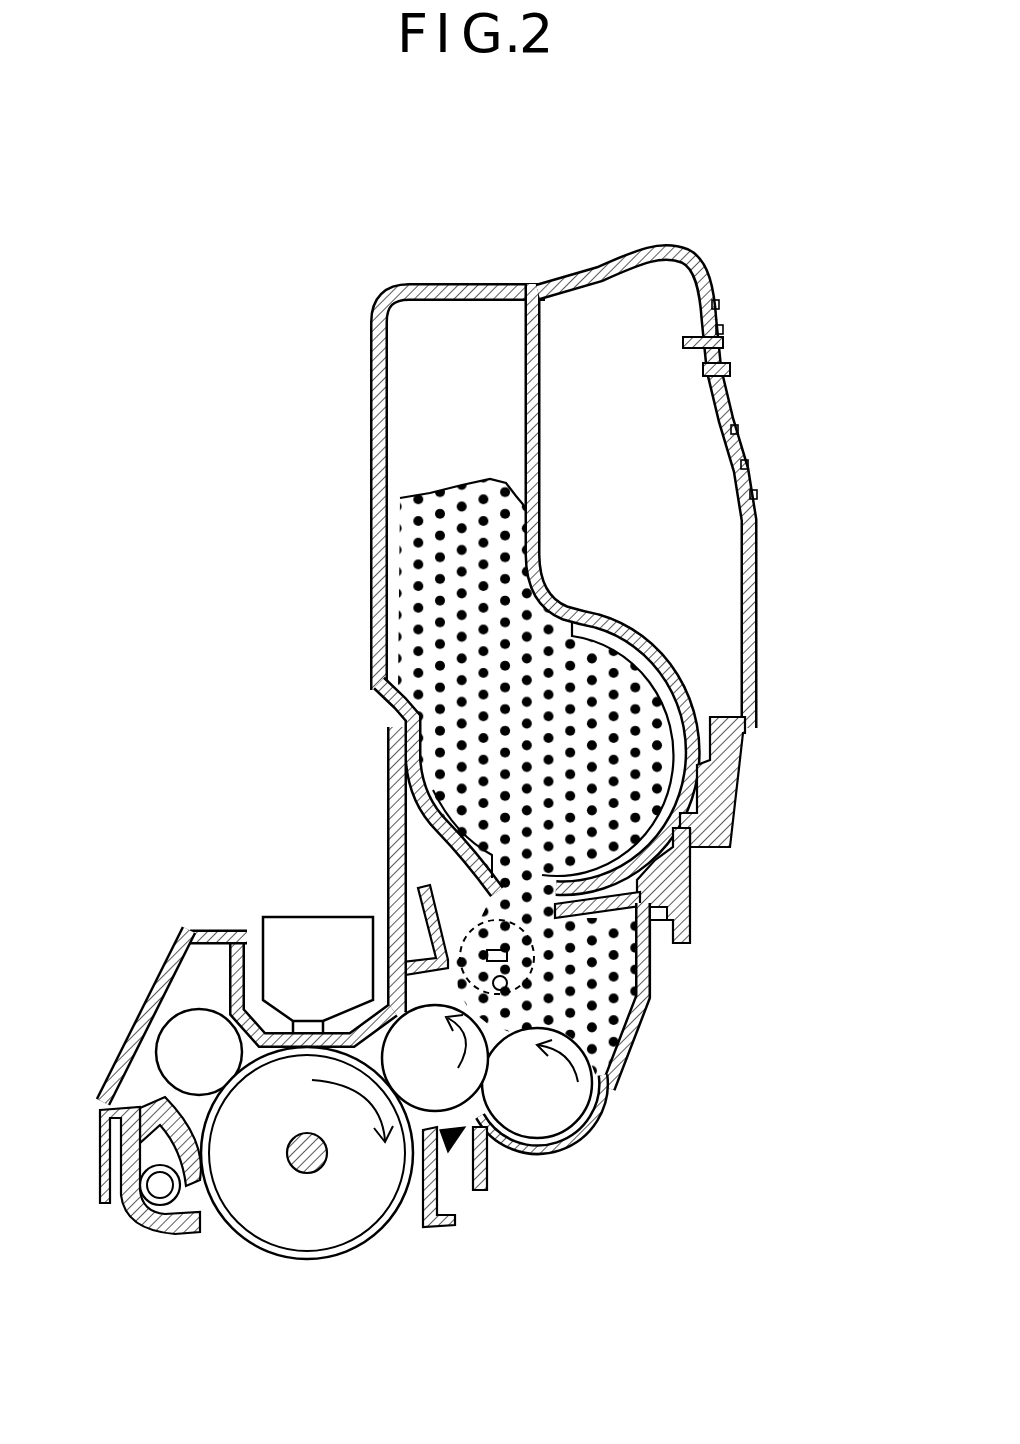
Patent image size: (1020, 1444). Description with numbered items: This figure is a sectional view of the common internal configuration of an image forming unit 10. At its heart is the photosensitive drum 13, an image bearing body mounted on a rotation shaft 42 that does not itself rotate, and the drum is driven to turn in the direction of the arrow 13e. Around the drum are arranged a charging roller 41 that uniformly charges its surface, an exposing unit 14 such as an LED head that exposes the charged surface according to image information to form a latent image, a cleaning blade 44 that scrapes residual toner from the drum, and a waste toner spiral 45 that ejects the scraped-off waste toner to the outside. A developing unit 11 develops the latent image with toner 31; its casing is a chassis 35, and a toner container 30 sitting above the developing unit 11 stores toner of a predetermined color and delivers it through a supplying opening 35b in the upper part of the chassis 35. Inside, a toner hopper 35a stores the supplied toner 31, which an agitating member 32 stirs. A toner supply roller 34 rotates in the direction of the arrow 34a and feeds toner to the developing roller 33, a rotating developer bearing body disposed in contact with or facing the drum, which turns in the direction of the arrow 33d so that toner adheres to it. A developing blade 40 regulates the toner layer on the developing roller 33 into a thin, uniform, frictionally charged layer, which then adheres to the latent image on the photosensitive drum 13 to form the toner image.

The image forming unit 10 is at (843, 365).
The toner container 30 is at (759, 590).
The toner 31 is at (617, 780).
The supplying opening 35b is at (527, 872).
The toner hopper 35a is at (610, 937).
The developing unit 11 is at (650, 1005).
The chassis 35 is at (633, 1040).
The toner supply roller 34 is at (600, 1112).
The arrow 34a is at (583, 1063).
The developing roller 33 is at (450, 1180).
The arrow 33d is at (537, 1153).
The agitating member 32 is at (507, 915).
The exposing unit 14 is at (300, 913).
The developing blade 40 is at (387, 973).
The charging roller 41 is at (160, 997).
The cleaning blade 44 is at (143, 1100).
The waste toner spiral 45 is at (177, 1235).
The photosensitive drum 13 is at (277, 1262).
The rotation shaft 42 is at (313, 1175).
The arrow 13e is at (400, 1225).